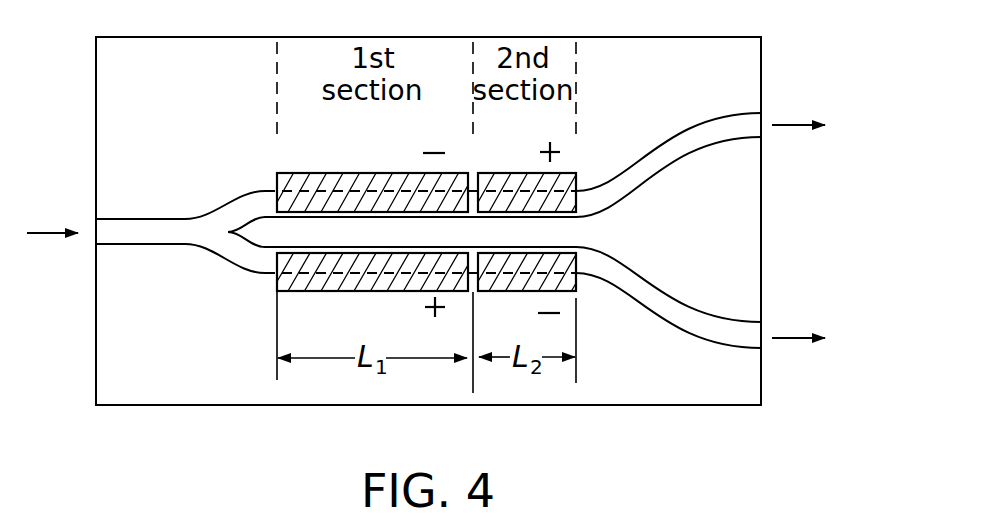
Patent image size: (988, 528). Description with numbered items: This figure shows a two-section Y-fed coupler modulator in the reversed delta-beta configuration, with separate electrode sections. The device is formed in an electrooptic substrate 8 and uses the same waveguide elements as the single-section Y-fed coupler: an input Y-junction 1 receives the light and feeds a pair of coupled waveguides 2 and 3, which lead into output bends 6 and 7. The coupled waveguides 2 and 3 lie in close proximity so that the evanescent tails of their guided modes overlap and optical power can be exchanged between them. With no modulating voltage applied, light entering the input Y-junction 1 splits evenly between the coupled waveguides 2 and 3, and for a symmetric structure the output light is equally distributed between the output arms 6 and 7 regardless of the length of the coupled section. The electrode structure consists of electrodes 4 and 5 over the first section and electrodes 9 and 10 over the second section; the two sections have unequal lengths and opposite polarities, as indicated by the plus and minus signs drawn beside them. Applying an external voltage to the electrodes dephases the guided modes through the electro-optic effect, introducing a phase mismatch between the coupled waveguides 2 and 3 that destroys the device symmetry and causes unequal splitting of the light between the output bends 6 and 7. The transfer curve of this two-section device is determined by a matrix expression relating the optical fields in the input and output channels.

The input Y-junction 1 is at (162, 245).
The coupled waveguide 2 is at (319, 190).
The coupled waveguide 3 is at (315, 265).
The electrode 4 is at (362, 173).
The electrode 5 is at (366, 292).
The output bend 6 is at (687, 164).
The output bend 7 is at (683, 296).
The electrooptic substrate 8 is at (96, 105).
The electrode 9 is at (531, 173).
The electrode 10 is at (532, 293).